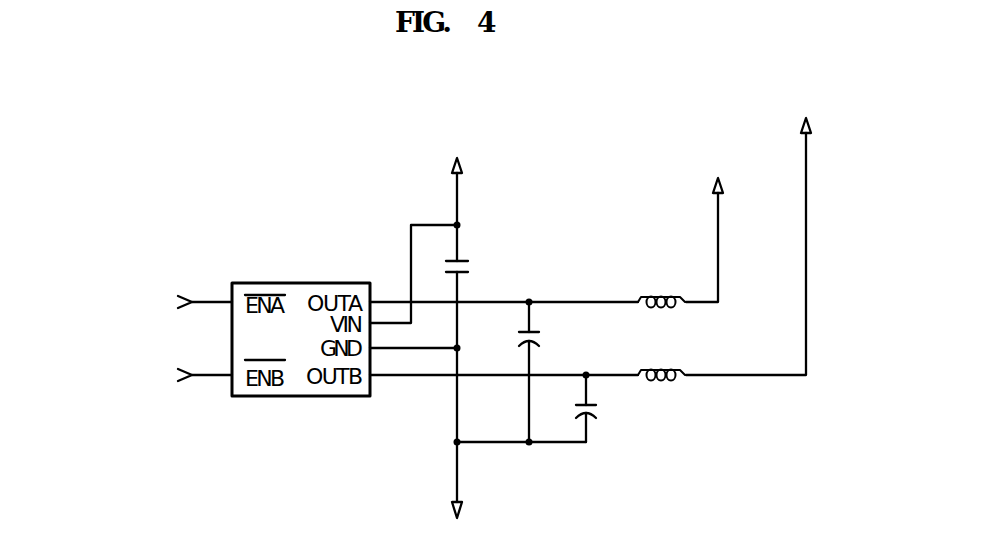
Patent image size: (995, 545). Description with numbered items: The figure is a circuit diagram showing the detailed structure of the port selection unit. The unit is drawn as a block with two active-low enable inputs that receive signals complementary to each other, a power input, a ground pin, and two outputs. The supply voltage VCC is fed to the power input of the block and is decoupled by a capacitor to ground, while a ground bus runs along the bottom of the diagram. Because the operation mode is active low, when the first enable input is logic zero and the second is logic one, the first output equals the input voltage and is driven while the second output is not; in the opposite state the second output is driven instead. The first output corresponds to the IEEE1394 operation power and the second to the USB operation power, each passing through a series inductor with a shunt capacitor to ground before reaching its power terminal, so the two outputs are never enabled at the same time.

The supply voltage VCC is at (457, 150).